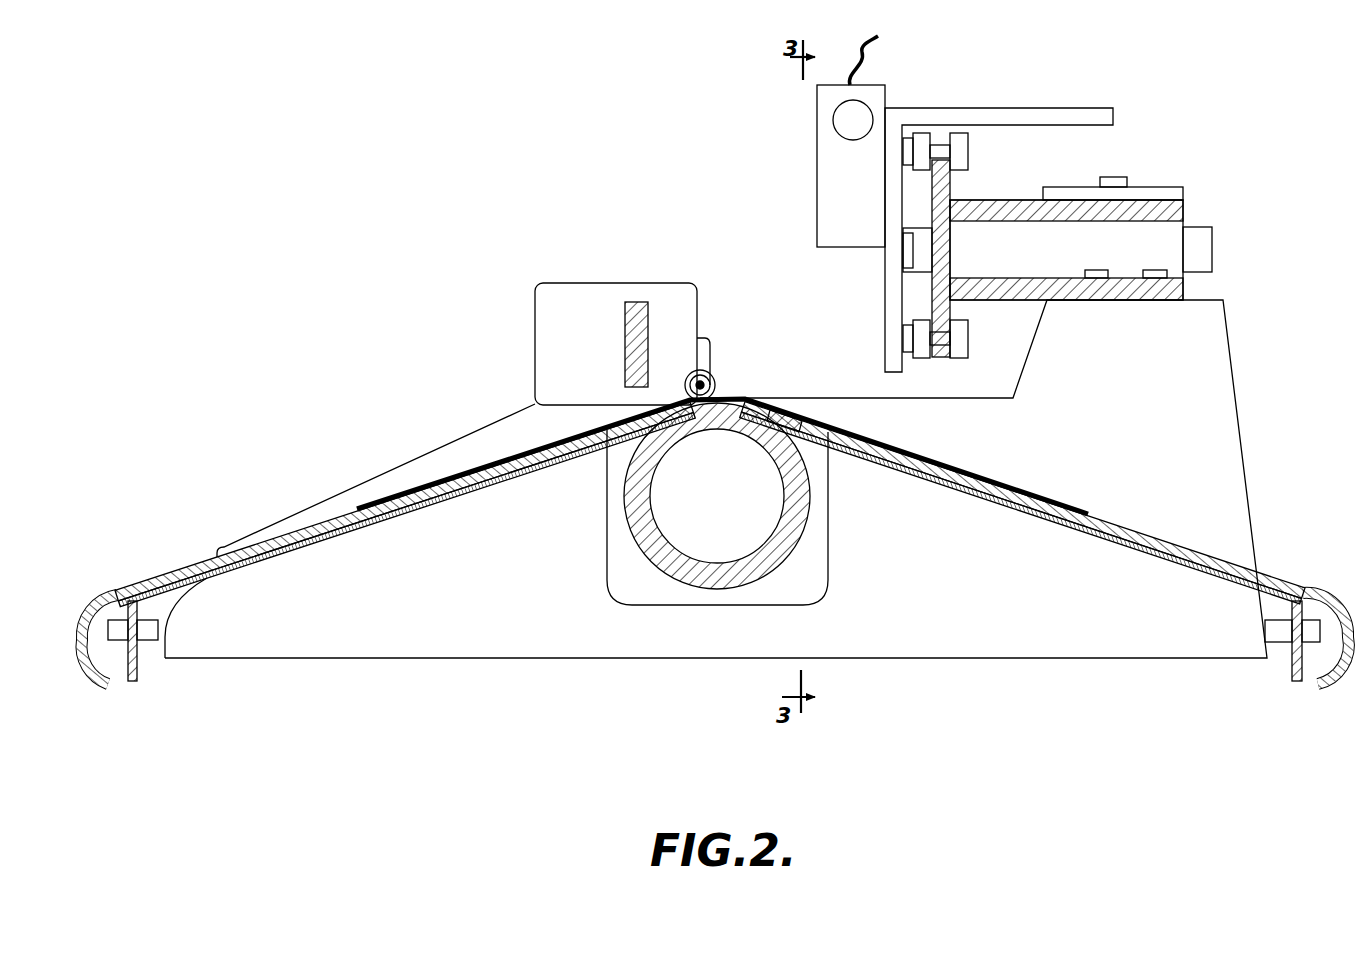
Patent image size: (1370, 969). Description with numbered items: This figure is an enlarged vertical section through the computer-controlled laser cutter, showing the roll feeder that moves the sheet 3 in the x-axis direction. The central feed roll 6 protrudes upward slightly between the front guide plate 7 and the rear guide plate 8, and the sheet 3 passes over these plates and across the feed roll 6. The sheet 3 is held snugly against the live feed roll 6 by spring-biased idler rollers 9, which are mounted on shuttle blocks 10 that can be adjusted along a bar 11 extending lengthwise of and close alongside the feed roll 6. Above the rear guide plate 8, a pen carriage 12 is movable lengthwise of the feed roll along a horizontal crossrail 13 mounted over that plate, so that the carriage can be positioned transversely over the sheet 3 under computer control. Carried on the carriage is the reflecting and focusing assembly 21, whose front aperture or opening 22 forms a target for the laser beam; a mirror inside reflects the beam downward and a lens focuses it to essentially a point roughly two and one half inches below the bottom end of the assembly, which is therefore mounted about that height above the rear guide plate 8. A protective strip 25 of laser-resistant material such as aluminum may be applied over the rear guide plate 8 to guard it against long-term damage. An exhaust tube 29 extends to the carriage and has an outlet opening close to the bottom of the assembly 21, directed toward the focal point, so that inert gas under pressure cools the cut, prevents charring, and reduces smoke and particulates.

The sheet 3 is at (420, 480).
The central feed roll 6 is at (638, 508).
The front guide plate 7 is at (315, 522).
The rear guide plate 8 is at (786, 406).
The spring-biased idler rollers 9 is at (712, 376).
The shuttle blocks 10 is at (540, 325).
The bar 11 is at (638, 300).
The pen carriage 12 is at (980, 108).
The horizontal crossrail 13 is at (948, 185).
The reflecting and focusing assembly 21 is at (843, 212).
The front aperture or opening 22 is at (832, 118).
The protective strip 25 is at (840, 437).
The exhaust tube 29 is at (882, 48).